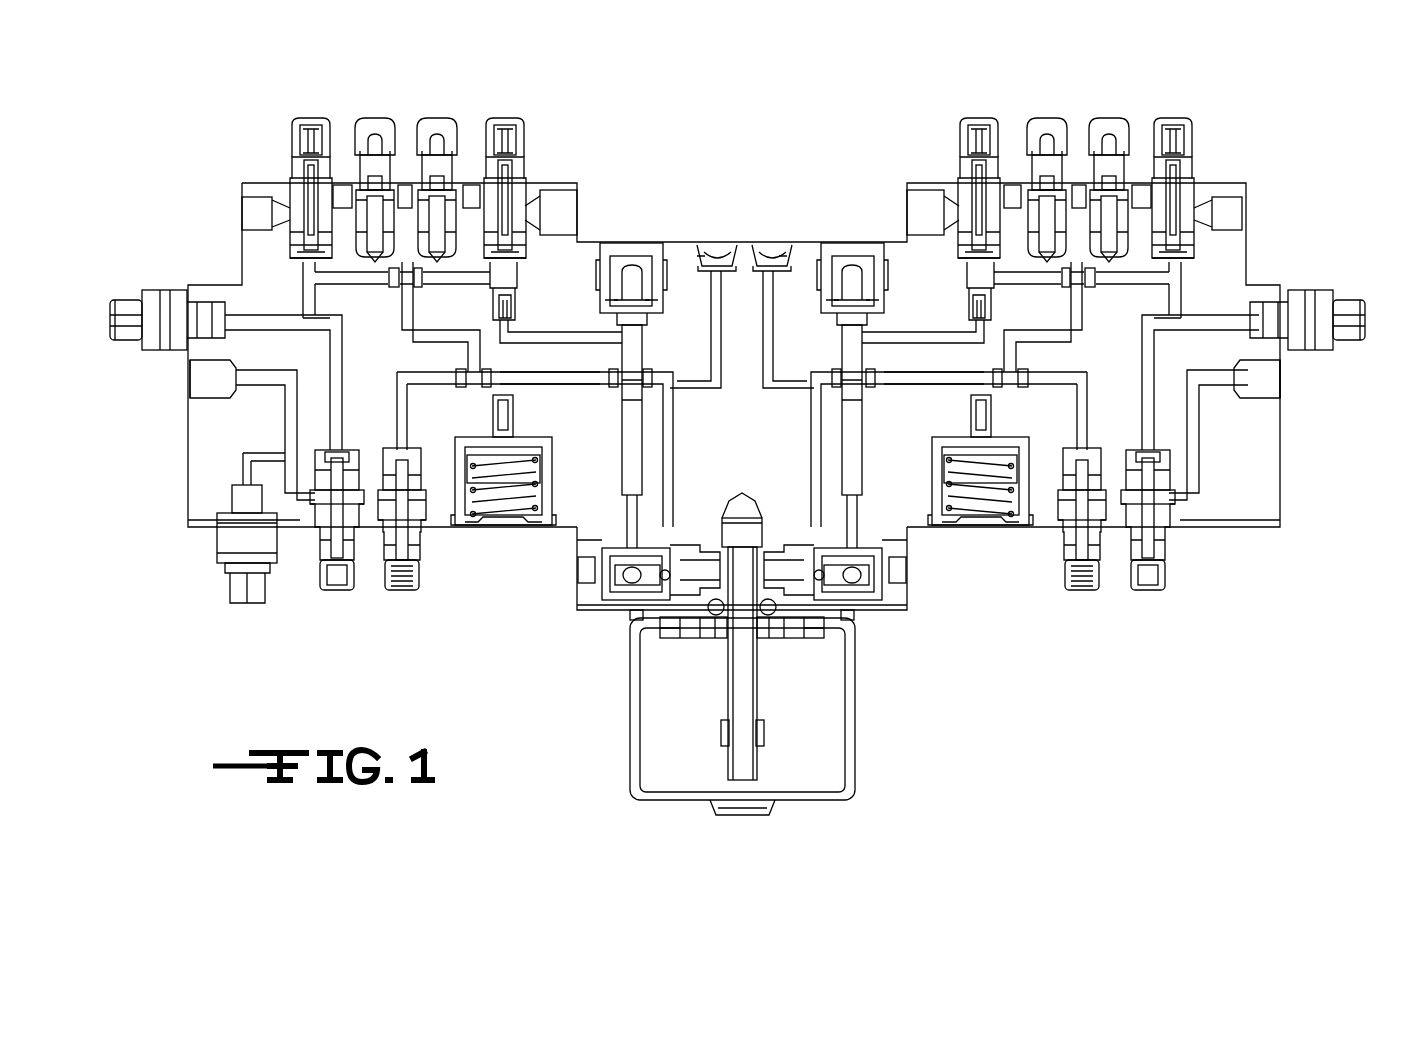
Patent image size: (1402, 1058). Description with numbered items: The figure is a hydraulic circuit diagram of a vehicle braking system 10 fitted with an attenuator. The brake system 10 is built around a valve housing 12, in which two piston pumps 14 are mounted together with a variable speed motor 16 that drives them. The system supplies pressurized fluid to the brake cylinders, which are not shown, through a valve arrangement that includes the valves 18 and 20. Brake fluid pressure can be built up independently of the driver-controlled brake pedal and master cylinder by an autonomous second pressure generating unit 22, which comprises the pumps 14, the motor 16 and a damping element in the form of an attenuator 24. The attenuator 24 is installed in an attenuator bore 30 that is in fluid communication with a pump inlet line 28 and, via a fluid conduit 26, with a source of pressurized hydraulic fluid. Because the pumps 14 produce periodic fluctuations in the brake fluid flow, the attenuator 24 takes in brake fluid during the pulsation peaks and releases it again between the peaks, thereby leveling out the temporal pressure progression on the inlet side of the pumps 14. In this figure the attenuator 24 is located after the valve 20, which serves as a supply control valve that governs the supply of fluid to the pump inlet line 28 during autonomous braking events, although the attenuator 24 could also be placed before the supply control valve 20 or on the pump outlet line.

The hydraulic vehicle braking system 10 is at (112, 432).
The valve housing 12 is at (270, 262).
The piston pumps 14 is at (835, 598).
The variable speed motor 16 is at (608, 745).
The valve 18 is at (322, 581).
The supply control valve 20 is at (416, 583).
The autonomous second pressure generating unit 22 is at (990, 707).
The attenuator 24 is at (762, 242).
The fluid conduit 26 is at (773, 432).
The pump inlet line 28 is at (906, 415).
The attenuator bore 30 is at (805, 283).